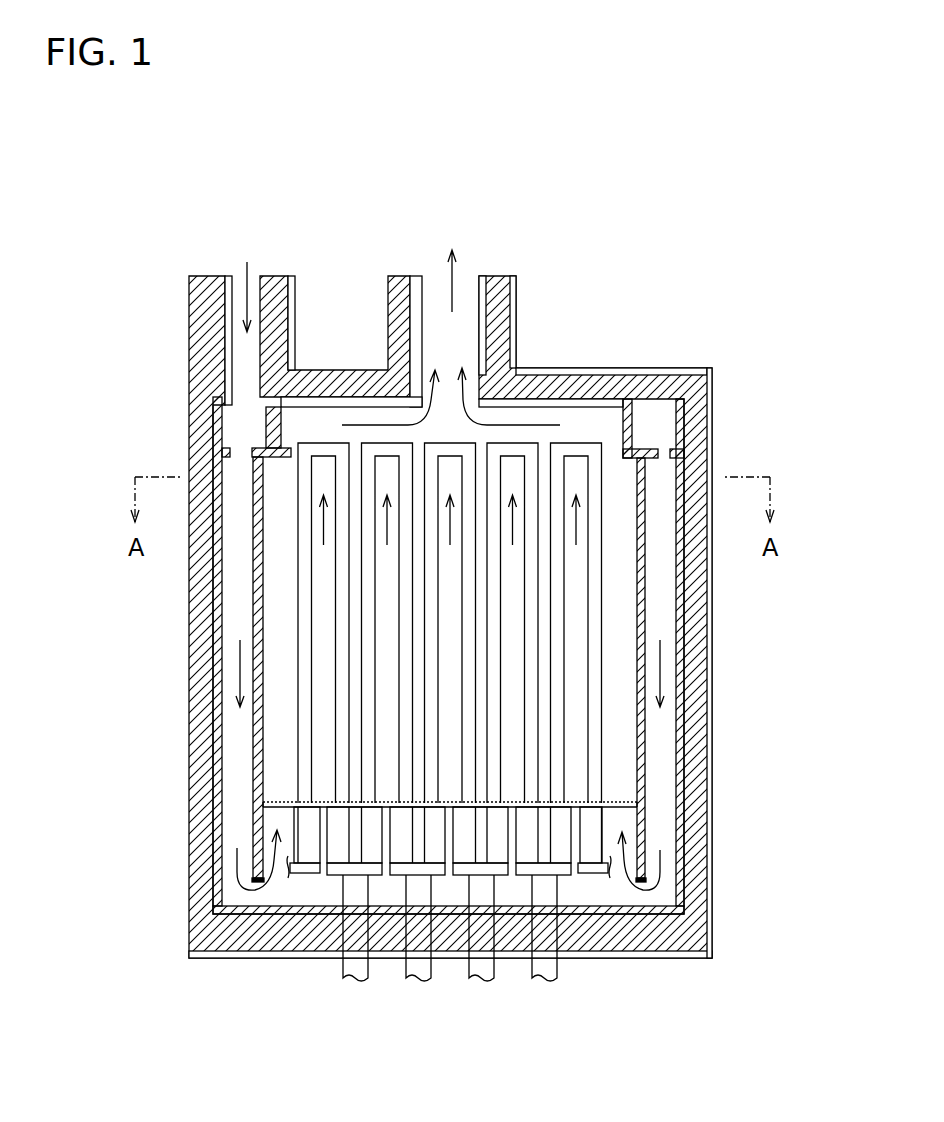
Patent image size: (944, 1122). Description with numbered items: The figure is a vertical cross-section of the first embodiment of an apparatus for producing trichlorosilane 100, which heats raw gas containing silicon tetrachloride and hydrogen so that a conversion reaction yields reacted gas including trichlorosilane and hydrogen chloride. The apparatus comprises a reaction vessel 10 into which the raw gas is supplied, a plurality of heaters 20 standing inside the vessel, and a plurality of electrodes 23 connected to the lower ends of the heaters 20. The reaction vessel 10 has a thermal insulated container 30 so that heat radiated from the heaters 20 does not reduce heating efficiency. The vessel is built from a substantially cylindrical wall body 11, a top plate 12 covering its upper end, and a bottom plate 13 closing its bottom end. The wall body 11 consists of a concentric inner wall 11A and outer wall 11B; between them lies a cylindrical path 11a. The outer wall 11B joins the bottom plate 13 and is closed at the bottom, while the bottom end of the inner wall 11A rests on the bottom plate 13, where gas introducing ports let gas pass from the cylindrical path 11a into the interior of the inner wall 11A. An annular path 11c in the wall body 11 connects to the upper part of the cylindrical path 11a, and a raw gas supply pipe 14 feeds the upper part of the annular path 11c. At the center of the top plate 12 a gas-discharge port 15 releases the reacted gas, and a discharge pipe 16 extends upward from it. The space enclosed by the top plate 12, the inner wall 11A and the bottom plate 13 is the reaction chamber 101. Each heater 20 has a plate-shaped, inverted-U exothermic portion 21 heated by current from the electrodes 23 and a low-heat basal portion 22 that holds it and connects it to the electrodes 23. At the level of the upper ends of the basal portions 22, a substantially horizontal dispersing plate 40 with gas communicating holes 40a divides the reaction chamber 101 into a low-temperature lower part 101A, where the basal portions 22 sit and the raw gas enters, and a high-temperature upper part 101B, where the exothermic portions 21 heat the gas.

The apparatus for producing trichlorosilane 100 is at (251, 219).
The reaction vessel 10 is at (193, 905).
The wall body 11 is at (245, 591).
The inner wall 11A is at (256, 535).
The outer wall 11B is at (215, 605).
The cylindrical path 11a is at (238, 770).
The annular path 11c is at (665, 417).
The top plate 12 is at (548, 400).
The bottom plate 13 is at (242, 912).
The raw gas supply pipe 14 is at (228, 342).
The gas-discharge port 15 is at (458, 357).
The discharge pipe 16 is at (430, 290).
The heater 20 is at (538, 653).
The exothermic portion 21 is at (593, 585).
The basal portion 22 is at (467, 852).
The electrode 23 is at (538, 967).
The thermal insulated container 30 is at (702, 405).
The dispersing plate 40 is at (277, 818).
The gas communicating hole 40a is at (386, 808).
The reaction chamber 101 is at (736, 674).
The low-temperature lower part 101A is at (628, 823).
The high-temperature upper part 101B is at (625, 728).